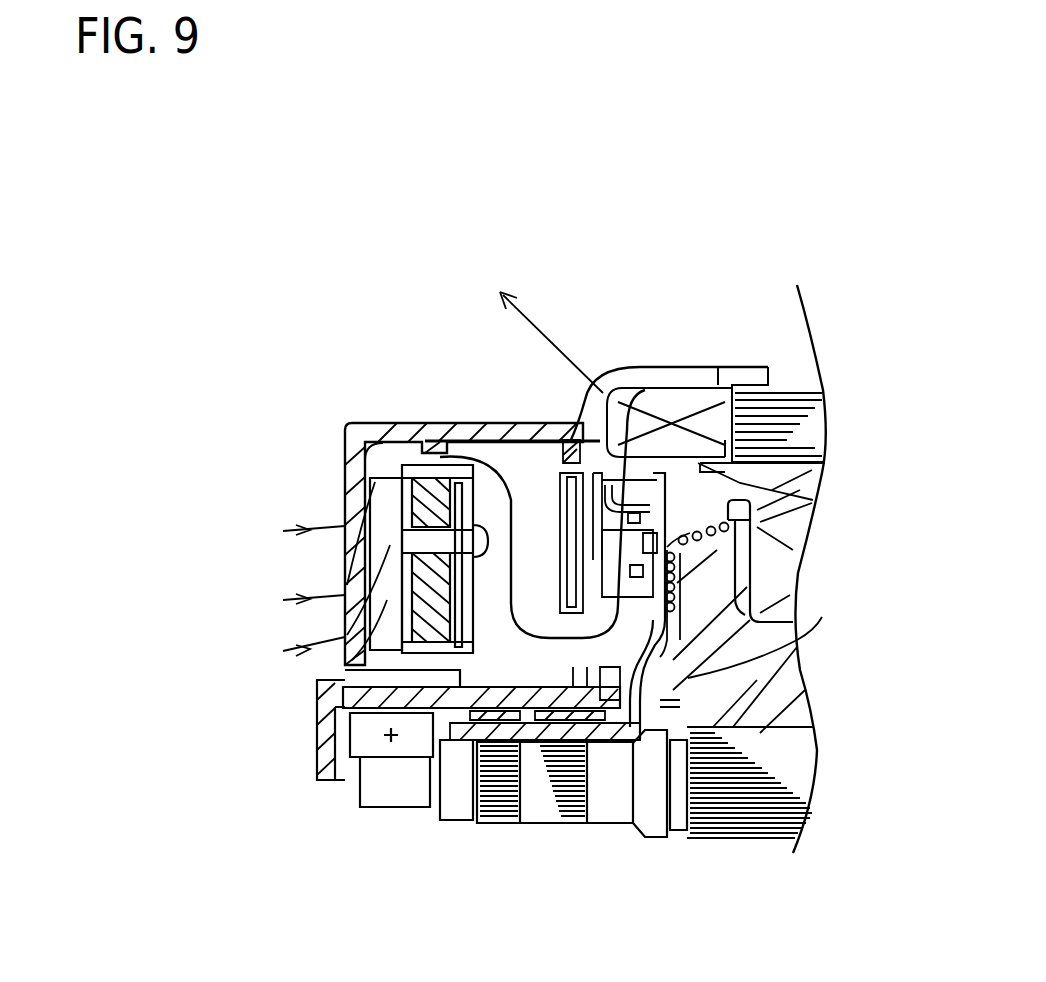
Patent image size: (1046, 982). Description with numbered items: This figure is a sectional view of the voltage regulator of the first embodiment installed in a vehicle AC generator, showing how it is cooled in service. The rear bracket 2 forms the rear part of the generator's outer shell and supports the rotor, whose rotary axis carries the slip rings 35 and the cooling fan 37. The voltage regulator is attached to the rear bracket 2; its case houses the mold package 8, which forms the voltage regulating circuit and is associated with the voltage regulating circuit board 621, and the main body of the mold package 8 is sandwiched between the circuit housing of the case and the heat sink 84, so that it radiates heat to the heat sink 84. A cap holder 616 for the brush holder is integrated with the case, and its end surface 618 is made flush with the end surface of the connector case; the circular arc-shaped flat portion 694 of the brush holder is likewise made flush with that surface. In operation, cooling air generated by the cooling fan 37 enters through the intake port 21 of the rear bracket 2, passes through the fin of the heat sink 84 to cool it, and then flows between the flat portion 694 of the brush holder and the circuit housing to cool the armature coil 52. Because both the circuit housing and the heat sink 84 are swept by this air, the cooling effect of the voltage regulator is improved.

The intake port 21 is at (345, 495).
The mold package 8 is at (357, 663).
The rear bracket 2 is at (317, 757).
The slip rings 35 is at (513, 742).
The heat sink 84 is at (383, 650).
The voltage regulating circuit board 621 is at (432, 480).
The cap holder 616 is at (512, 455).
The end surface 618 is at (595, 386).
The armature coil 52 is at (625, 470).
The cooling fan 37 is at (660, 492).
The circular arc-shaped flat portion 694 is at (658, 660).